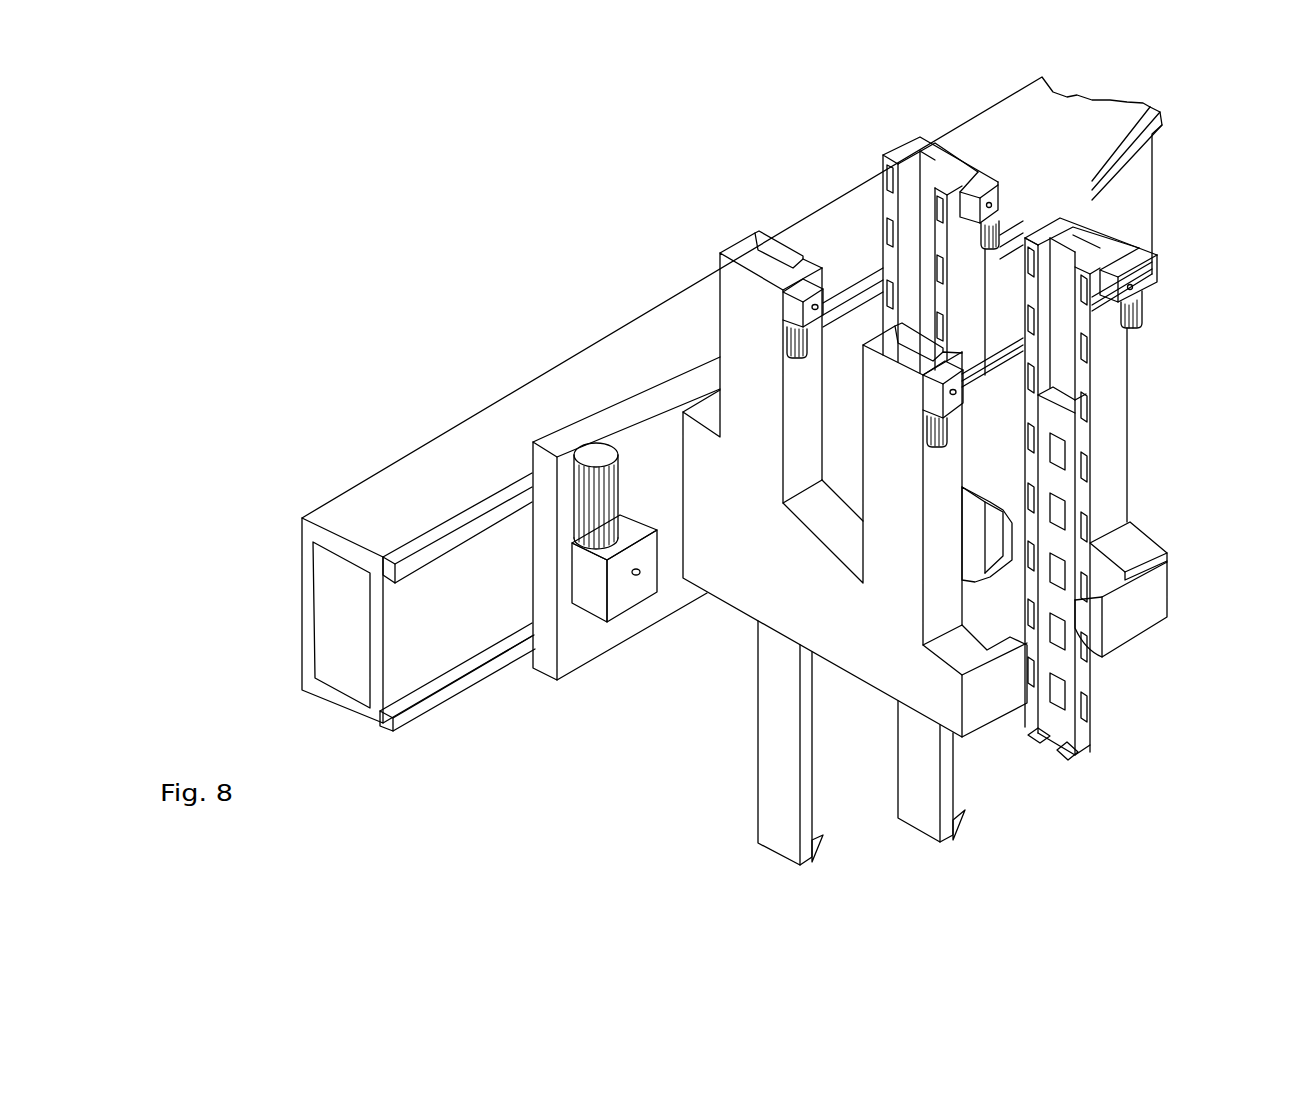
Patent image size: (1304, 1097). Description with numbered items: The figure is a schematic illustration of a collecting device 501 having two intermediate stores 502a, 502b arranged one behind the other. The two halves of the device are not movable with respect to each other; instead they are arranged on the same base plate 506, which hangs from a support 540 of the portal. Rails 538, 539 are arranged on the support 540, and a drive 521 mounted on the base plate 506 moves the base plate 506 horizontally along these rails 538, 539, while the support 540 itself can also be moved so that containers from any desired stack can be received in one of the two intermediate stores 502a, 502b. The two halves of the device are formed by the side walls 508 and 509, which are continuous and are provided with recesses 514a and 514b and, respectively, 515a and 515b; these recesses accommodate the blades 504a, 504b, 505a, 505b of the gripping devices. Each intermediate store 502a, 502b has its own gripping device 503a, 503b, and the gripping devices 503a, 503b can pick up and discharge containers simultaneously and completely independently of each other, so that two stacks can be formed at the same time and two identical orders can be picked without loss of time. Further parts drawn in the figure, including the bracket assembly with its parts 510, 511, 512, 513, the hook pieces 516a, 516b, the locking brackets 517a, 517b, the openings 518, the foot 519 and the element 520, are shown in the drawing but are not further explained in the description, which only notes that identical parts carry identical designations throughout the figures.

The collecting device 501 is at (686, 714).
The intermediate store 502a is at (992, 262).
The intermediate store 502b is at (1148, 434).
The gripping device 503a is at (728, 788).
The gripping device 503b is at (1112, 708).
The blade 504a is at (975, 598).
The blade 504b is at (1083, 731).
The blade 505a is at (773, 842).
The blade 505b is at (915, 815).
The base plate 506 is at (572, 667).
The side wall 508 is at (1132, 522).
The side wall 509 is at (758, 600).
The bracket assembly 510 is at (1167, 583).
The bracket block 511 is at (1142, 563).
The base block 512 is at (970, 712).
The guide shoe 513 is at (1093, 637).
The recess 514a is at (905, 170).
The recess 514b is at (1068, 250).
The recess 515a is at (763, 247).
The recess 515b is at (893, 328).
The hook bracket 516a is at (985, 182).
The hook bracket 516b is at (1150, 290).
The locking bracket 517a is at (792, 314).
The locking bracket 517b is at (930, 398).
The windows 518 is at (1062, 512).
The foot 519 is at (1033, 740).
The groove end 520 is at (1082, 407).
The drive 521 is at (627, 608).
The rail 538 is at (403, 726).
The rail 539 is at (383, 573).
The support 540 is at (342, 512).